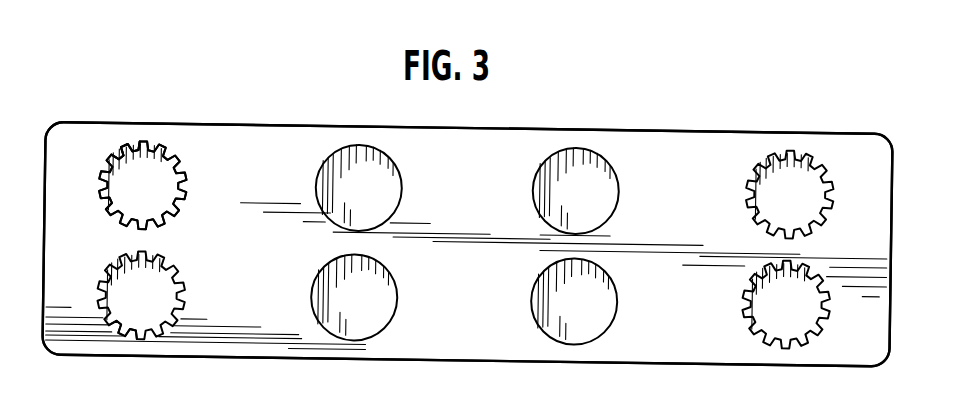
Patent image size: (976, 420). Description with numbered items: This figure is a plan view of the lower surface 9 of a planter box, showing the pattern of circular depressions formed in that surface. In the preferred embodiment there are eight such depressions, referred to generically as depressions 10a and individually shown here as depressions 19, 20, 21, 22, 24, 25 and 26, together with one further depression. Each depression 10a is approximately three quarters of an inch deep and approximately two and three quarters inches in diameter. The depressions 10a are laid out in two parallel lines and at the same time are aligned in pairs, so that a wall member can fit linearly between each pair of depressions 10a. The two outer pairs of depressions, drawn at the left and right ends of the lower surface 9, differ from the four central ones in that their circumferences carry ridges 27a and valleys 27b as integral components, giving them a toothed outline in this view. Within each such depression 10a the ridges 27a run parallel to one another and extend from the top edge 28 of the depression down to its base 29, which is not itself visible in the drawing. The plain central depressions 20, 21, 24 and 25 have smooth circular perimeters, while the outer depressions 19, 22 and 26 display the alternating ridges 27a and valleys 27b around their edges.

The lower surface 9 is at (653, 140).
The depressions 10a is at (530, 167).
The depression 19 is at (128, 146).
The depression 20 is at (378, 150).
The depression 21 is at (562, 150).
The depression 22 is at (773, 158).
The depression 24 is at (390, 327).
The depression 25 is at (603, 333).
The depression 26 is at (770, 345).
The ridges 27a is at (172, 325).
The valleys 27b is at (112, 330).
The top edge 28 is at (183, 168).
The base 29 is at (163, 204).